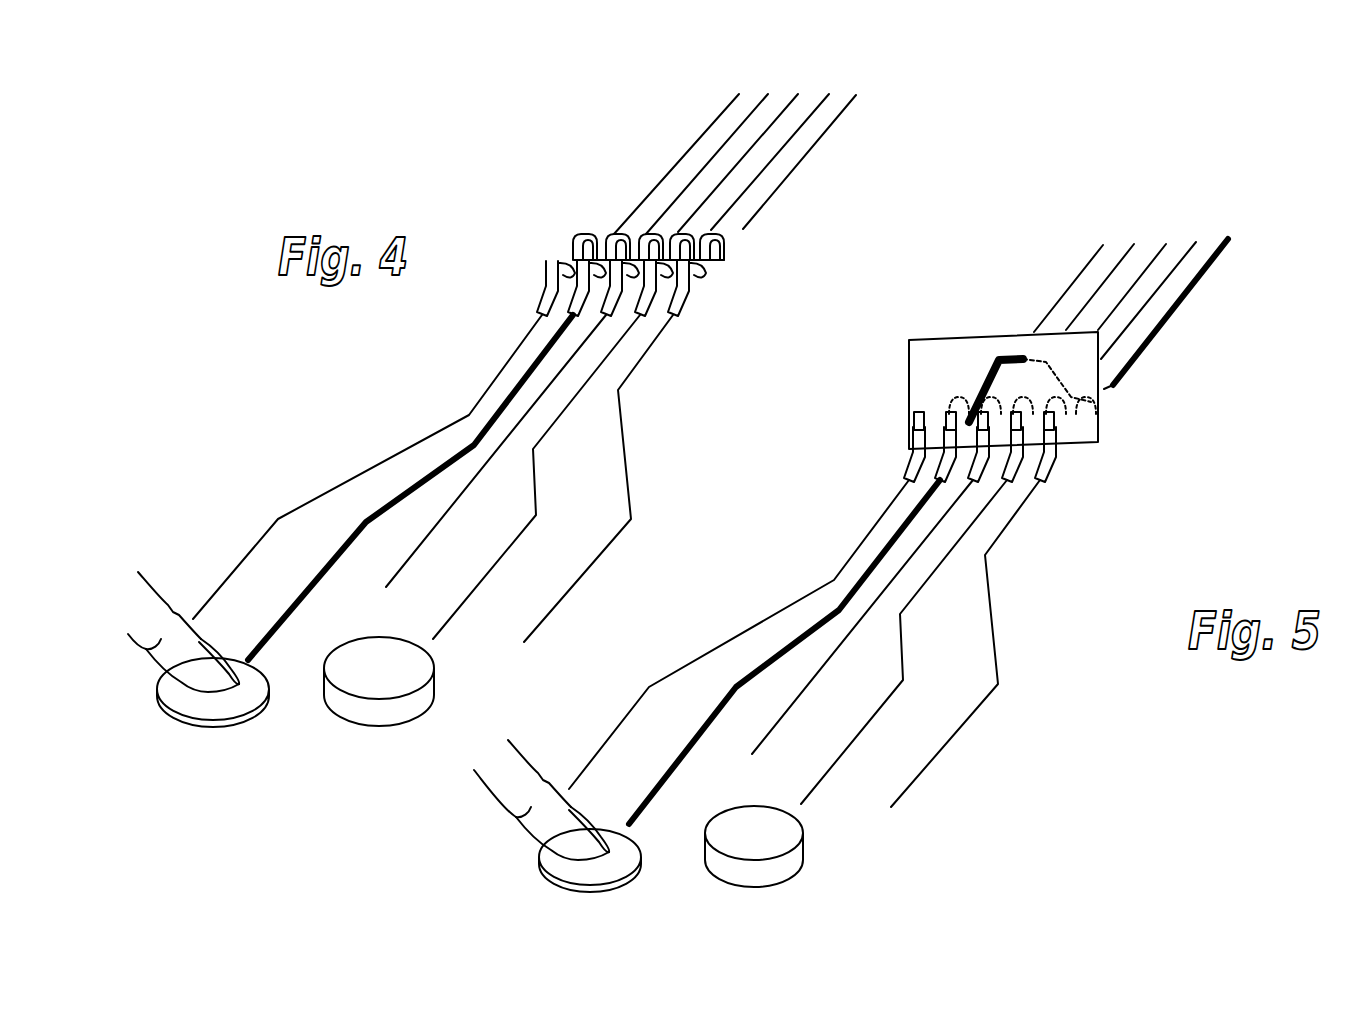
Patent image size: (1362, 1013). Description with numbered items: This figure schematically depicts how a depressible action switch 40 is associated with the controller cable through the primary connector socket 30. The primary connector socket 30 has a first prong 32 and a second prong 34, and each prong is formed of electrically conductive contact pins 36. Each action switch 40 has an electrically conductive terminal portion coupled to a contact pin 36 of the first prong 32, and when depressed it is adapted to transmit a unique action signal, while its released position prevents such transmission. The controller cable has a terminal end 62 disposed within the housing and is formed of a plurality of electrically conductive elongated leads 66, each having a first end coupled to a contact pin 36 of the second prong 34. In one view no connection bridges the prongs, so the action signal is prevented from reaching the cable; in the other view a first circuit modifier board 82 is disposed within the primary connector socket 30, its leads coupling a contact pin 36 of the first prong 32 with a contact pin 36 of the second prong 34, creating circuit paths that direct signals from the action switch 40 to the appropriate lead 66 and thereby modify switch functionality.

In FIG. 4, the primary connector socket 30 is at (653, 222).
In FIG. 4, the first prong 32 is at (513, 300).
In FIG. 4, the second prong 34 is at (582, 190).
In FIG. 4, the contact pins 36 is at (642, 230).
In FIG. 4, the action switches 40 is at (247, 687).
In FIG. 4, the terminal end 62 is at (864, 97).
In FIG. 4, the electrically conductive elongated leads 66 is at (830, 162).
In FIG. 5, the first circuit modifier board 82 is at (918, 372).